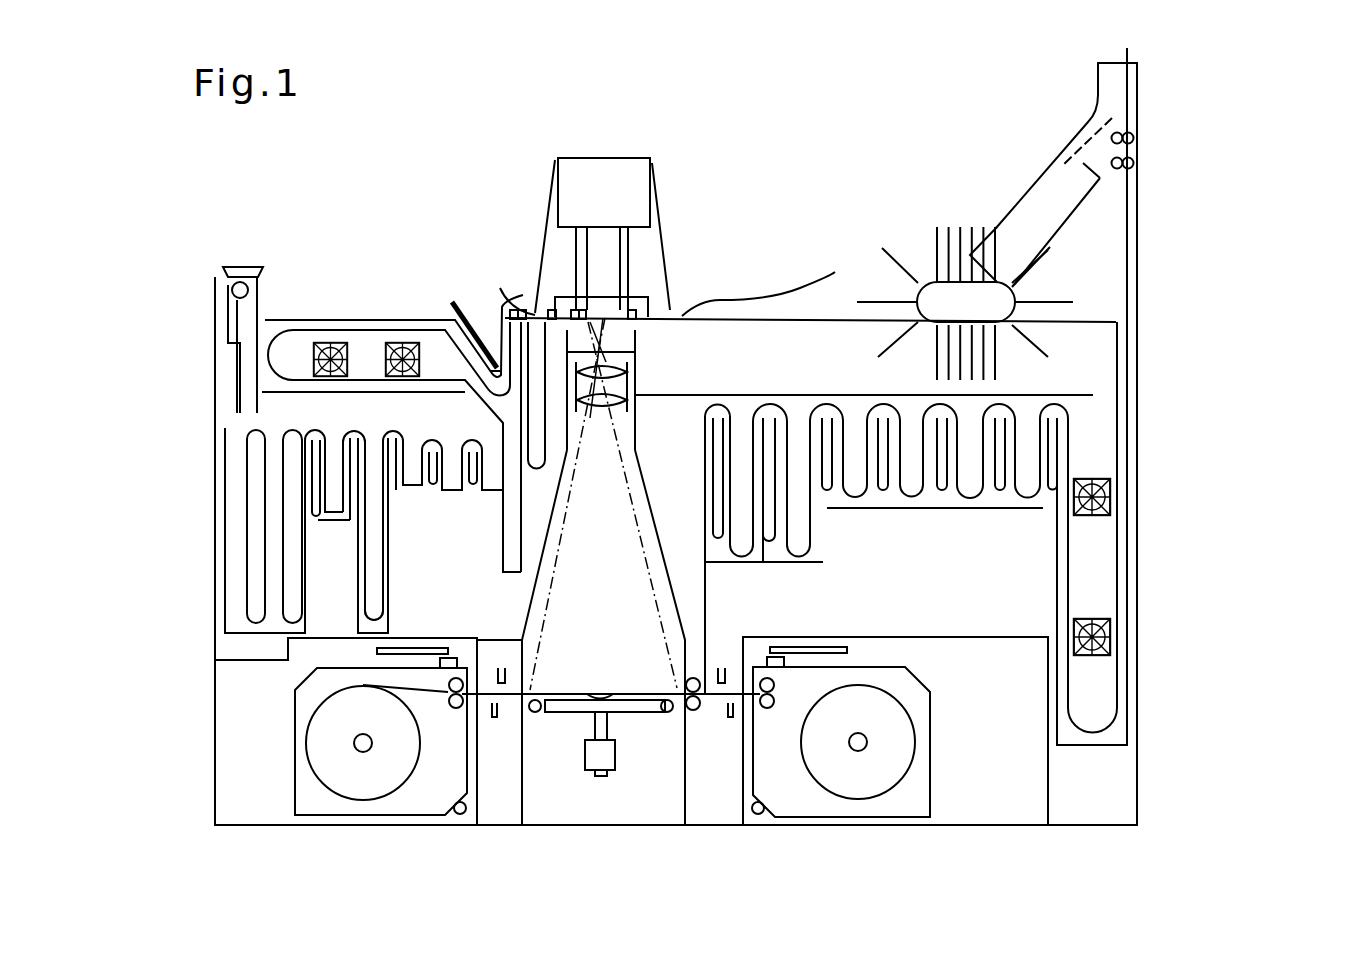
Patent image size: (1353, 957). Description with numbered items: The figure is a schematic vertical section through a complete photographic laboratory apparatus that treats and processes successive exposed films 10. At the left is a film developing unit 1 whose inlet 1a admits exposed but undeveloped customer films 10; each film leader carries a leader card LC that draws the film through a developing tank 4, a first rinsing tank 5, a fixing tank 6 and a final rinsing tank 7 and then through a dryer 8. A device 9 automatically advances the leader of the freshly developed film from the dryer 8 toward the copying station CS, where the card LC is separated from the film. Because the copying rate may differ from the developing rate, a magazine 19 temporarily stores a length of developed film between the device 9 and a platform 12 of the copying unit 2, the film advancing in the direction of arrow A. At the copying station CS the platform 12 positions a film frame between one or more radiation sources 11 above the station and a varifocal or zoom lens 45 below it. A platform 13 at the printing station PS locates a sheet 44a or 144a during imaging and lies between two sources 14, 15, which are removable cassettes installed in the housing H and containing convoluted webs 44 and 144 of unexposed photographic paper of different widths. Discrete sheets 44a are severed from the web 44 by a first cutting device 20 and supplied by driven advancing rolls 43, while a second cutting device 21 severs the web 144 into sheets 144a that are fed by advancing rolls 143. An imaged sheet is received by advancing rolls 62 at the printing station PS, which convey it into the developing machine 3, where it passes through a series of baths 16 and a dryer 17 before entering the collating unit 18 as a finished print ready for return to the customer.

The film developing unit 1 is at (381, 252).
The inlet 1a is at (239, 272).
The copying unit 2 is at (577, 836).
The developing machine 3 is at (1162, 495).
The developing tank 4 is at (273, 623).
The first rinsing tank 5 is at (333, 517).
The fixing tank 6 is at (378, 612).
The final rinsing tank 7 is at (484, 478).
The dryer 8 is at (355, 340).
The device for automatic advancement 9 is at (463, 298).
The photographic film 10 is at (245, 420).
The radiation source 11 is at (642, 172).
The platform 12 is at (612, 323).
The platform 13 is at (606, 786).
The source (cassette) 14 is at (408, 803).
The source (cassette) 15 is at (818, 805).
The baths 16 is at (1050, 567).
The dryer 17 is at (1112, 592).
The collating unit 18 is at (936, 196).
The magazine 19 is at (533, 472).
The first cutting or subdividing device 20 is at (493, 718).
The second cutting or subdividing device 21 is at (730, 718).
The driven advancing rolls 43 is at (462, 680).
The web 44 is at (413, 692).
The discrete sheet 44a is at (525, 692).
The varifocal or zoom lens 45 is at (630, 401).
The advancing rolls 62 is at (695, 711).
The driven advancing rolls 143 is at (780, 689).
The web 144 is at (770, 708).
The discrete sheet 144a is at (708, 690).
The leader card LC is at (456, 300).
The copying station CS is at (658, 265).
The printing station PS is at (596, 686).
The arrow (direction of film advancement) A is at (747, 270).
The housing H is at (1140, 722).